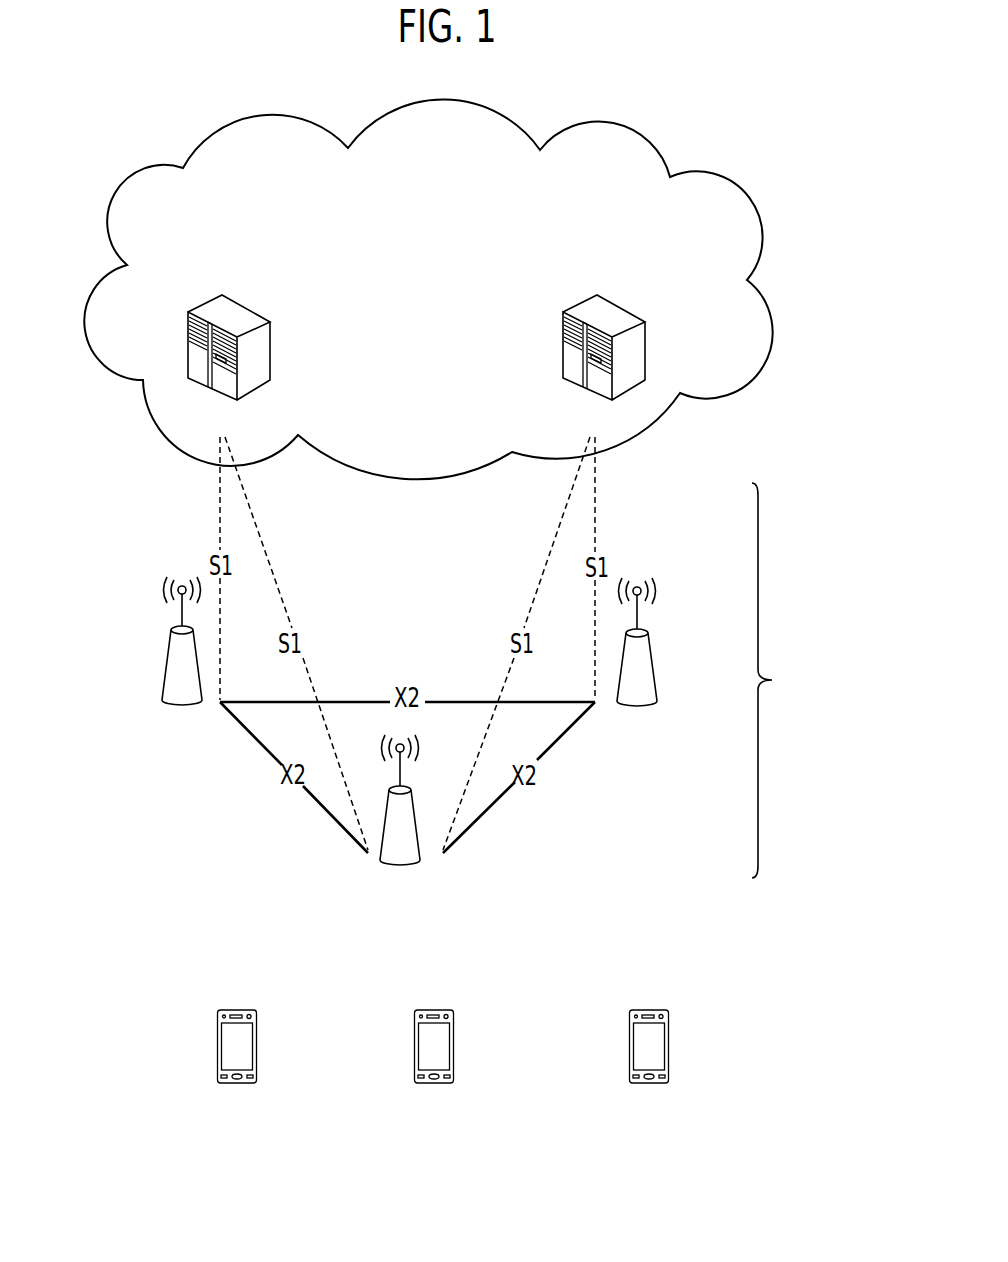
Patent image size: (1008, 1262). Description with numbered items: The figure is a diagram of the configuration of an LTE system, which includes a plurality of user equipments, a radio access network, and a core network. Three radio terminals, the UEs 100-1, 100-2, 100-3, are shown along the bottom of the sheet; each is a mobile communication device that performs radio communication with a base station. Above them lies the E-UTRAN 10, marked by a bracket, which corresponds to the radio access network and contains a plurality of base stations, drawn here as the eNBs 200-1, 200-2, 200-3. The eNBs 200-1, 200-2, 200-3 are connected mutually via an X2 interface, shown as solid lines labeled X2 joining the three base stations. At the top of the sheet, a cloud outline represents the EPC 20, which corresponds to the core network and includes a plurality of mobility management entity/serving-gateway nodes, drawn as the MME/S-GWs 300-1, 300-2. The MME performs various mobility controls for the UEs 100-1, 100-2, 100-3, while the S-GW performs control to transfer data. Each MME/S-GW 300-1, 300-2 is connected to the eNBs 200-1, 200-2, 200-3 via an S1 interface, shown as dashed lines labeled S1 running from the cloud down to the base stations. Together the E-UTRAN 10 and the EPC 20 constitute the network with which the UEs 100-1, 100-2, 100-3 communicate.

The E-UTRAN 10 is at (813, 680).
The EPC 20 is at (647, 143).
The UE 100-1 is at (252, 1010).
The UE 100-2 is at (449, 1010).
The UE 100-3 is at (664, 1010).
The eNB 200-1 is at (167, 667).
The eNB 200-2 is at (418, 836).
The eNB 200-3 is at (650, 645).
The MME/S-GW 300-1 is at (252, 308).
The MME/S-GW 300-2 is at (613, 306).